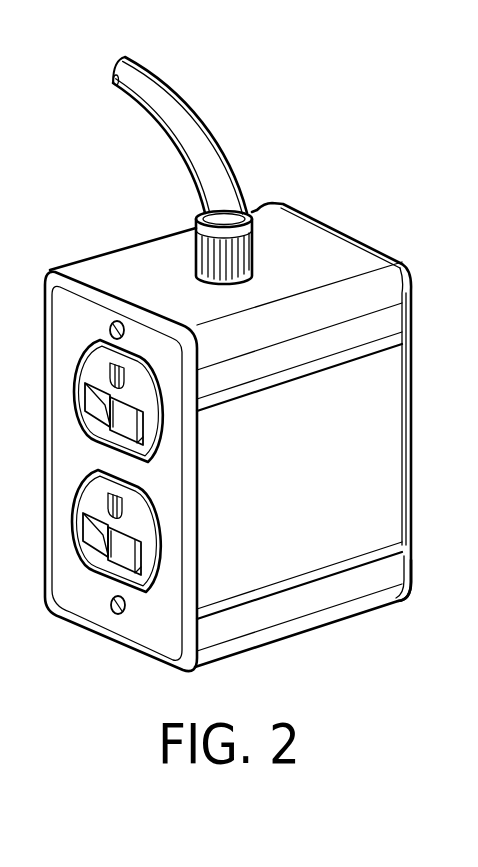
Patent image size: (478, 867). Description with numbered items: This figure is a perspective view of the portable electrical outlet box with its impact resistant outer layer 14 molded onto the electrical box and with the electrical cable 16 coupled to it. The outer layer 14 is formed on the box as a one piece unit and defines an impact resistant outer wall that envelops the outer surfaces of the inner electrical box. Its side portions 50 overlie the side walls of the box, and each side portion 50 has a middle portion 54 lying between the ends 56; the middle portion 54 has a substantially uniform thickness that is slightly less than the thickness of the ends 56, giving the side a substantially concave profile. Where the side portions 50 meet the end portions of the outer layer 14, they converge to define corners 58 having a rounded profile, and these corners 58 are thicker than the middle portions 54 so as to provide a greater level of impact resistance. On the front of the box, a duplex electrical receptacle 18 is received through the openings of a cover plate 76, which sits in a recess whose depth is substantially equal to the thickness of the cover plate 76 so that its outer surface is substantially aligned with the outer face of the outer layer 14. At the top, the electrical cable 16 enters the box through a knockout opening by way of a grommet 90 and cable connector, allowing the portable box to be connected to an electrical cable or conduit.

The outer layer 14 is at (362, 460).
The electrical cable 16 is at (207, 121).
The duplex electrical receptacle 18 is at (97, 499).
The side portions 50 is at (378, 407).
The middle portion 54 is at (337, 498).
The ends 56 is at (416, 563).
The corners 58 is at (92, 256).
The cover plate 76 is at (86, 591).
The grommet 90 is at (296, 214).